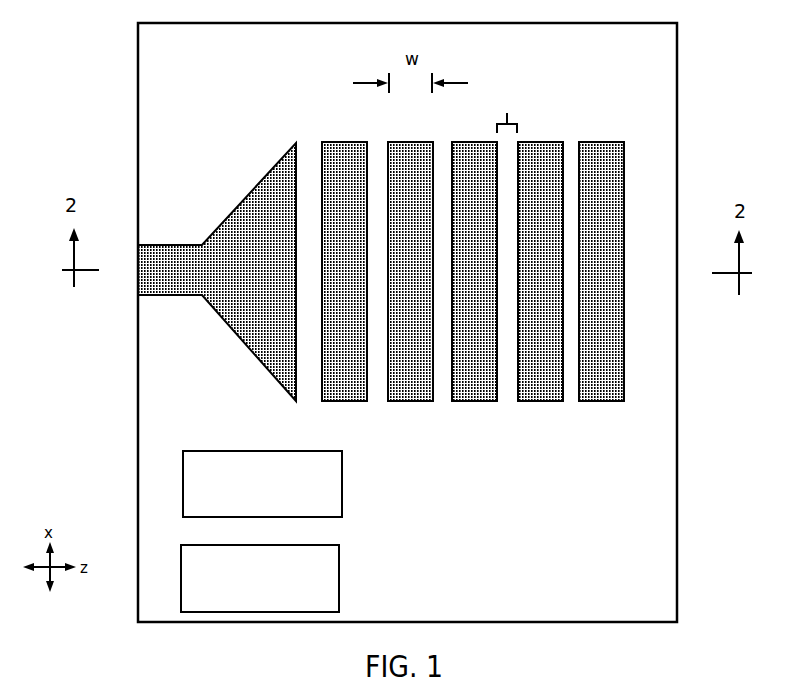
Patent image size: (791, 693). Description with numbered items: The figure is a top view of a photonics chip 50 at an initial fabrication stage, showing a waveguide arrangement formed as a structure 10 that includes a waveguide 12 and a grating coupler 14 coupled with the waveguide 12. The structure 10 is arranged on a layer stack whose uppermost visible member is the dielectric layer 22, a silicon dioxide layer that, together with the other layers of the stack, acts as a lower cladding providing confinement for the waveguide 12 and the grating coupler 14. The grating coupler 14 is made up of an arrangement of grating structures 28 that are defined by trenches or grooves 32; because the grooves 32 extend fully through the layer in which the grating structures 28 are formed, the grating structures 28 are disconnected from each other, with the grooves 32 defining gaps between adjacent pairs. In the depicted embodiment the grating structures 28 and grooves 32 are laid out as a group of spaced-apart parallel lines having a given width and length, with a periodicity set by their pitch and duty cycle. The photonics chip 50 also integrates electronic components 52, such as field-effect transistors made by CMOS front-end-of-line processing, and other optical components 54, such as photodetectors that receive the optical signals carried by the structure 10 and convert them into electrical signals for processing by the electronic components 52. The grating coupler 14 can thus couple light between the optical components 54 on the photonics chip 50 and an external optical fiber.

The photonics chip 50 is at (112, 68).
The dielectric layer 22 is at (158, 435).
The structure 10 is at (252, 103).
The waveguide 12 is at (225, 282).
The grating coupler 14 is at (566, 127).
The grating structures 28 is at (350, 170).
The grooves 32 is at (507, 109).
The electronic components 52 is at (342, 481).
The optical components 54 is at (339, 580).